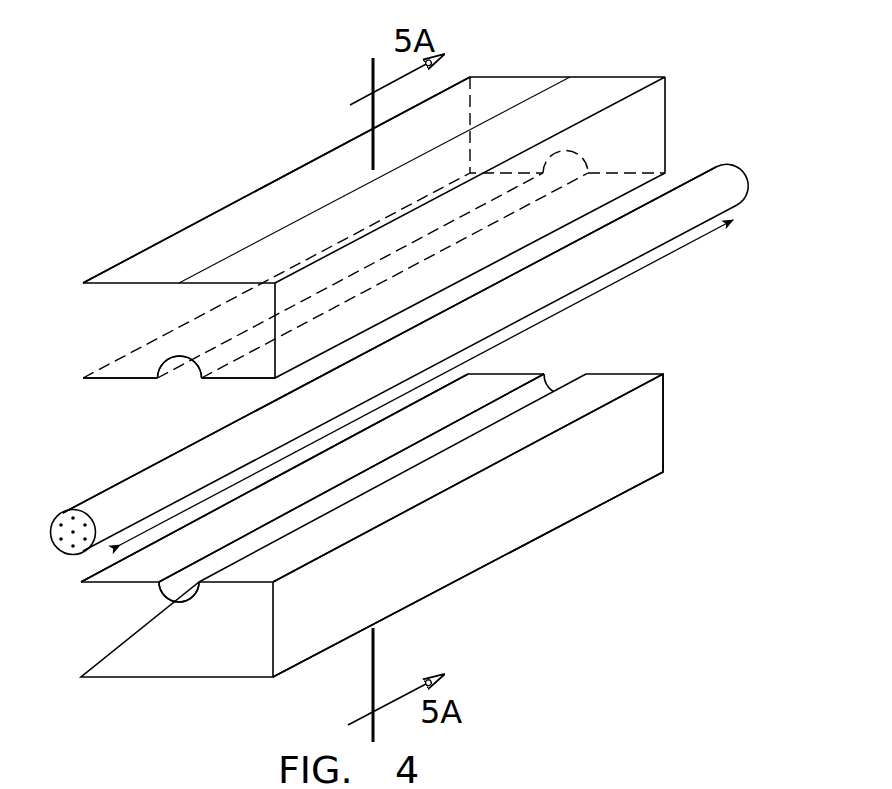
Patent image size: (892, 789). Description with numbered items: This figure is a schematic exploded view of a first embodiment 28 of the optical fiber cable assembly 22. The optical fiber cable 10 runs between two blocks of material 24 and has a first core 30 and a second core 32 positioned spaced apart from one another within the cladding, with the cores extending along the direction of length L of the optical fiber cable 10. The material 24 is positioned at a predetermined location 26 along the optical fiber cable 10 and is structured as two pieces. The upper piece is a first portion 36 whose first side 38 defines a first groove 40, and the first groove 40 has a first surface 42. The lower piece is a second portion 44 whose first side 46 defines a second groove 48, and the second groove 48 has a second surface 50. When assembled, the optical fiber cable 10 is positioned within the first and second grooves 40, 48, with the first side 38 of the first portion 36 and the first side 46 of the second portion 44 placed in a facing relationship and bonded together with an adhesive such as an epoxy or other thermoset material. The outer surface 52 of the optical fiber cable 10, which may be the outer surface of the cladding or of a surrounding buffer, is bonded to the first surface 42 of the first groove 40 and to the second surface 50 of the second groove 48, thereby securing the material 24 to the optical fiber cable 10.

The optical fiber cable 10 is at (380, 359).
The optical fiber cable assembly 22 is at (362, 228).
The material 24 is at (127, 237).
The predetermined location 26 is at (350, 525).
The first embodiment 28 is at (214, 170).
The first core 30 is at (72, 532).
The second core 32 is at (72, 516).
The first portion 36 is at (530, 75).
The first side of first portion 38 is at (118, 380).
The first groove 40 is at (176, 382).
The first surface 42 is at (178, 354).
The second portion 44 is at (358, 594).
The first side of second portion 46 is at (290, 556).
The second groove 48 is at (164, 582).
The second surface 50 is at (175, 596).
The outer surface 52 is at (115, 492).
The direction of length L is at (525, 330).